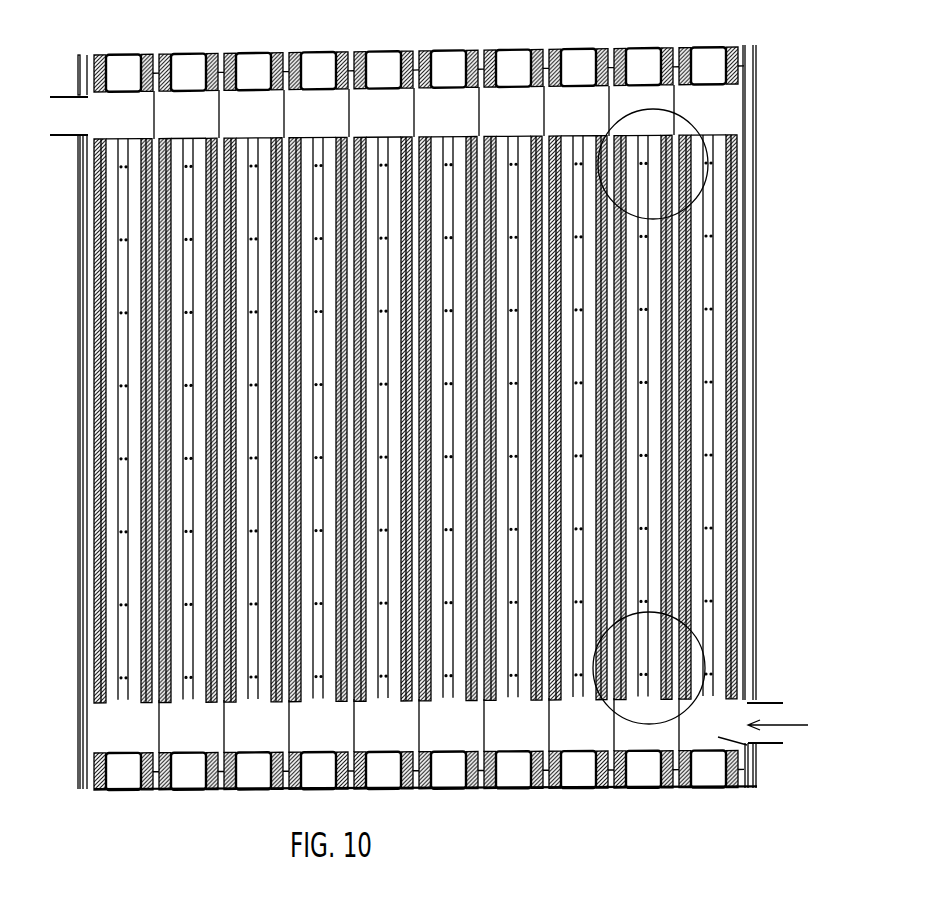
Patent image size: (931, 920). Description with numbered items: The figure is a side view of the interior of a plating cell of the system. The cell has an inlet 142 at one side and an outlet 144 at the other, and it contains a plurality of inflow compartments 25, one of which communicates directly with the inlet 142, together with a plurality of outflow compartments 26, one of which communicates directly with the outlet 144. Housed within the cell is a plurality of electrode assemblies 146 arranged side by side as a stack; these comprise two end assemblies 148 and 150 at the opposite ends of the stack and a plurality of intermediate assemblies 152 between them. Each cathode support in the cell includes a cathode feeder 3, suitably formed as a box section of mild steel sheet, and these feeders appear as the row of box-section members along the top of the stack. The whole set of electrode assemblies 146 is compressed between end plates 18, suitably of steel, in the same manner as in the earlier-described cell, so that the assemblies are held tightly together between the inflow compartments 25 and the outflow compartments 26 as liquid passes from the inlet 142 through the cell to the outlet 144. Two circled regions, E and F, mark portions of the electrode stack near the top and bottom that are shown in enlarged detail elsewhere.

The outlet 144 is at (65, 96).
The outflow compartments 26 is at (137, 110).
The electrode assemblies 146 is at (443, 108).
The cathode feeder 3 is at (700, 62).
The detail E is at (703, 187).
The detail F is at (705, 660).
The inlet 142 is at (764, 745).
The inflow compartments 25 is at (757, 747).
The end assembly 150 is at (743, 793).
The end assembly 148 is at (100, 802).
The intermediate assemblies 152 is at (421, 789).
The end plates 18 is at (78, 789).